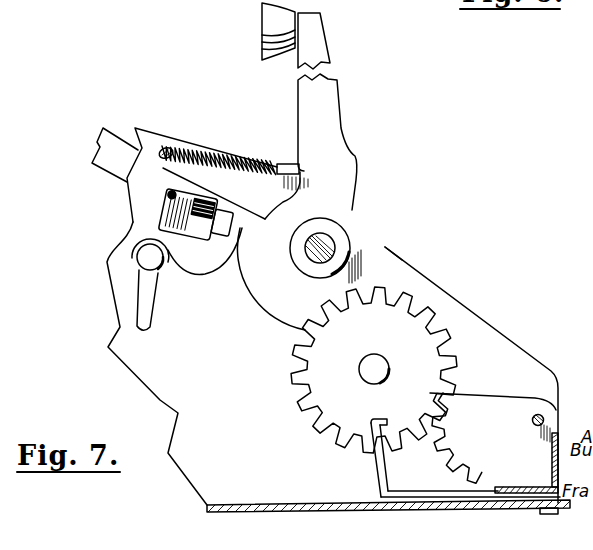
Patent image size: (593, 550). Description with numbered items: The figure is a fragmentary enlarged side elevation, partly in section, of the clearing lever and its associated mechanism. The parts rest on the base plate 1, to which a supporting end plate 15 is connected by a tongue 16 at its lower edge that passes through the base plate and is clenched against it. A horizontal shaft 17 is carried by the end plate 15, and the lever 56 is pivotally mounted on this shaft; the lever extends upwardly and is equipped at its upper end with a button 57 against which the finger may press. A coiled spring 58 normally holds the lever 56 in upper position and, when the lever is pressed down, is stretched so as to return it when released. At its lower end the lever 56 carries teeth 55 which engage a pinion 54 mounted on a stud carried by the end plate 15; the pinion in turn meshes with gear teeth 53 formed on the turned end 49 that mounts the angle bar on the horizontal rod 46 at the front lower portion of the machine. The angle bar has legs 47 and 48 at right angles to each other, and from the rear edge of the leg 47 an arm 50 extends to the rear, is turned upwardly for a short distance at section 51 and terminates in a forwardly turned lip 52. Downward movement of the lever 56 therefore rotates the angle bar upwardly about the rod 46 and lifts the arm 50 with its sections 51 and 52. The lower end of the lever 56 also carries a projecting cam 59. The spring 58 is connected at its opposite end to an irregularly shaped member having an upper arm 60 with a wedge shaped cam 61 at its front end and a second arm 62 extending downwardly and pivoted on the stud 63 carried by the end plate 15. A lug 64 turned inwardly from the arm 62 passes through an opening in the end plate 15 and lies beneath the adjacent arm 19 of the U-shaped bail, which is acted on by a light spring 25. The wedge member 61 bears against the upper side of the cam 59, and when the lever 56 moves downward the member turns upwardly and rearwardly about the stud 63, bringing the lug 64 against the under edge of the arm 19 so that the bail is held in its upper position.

The base plate 1 is at (291, 511).
The end plate 15 is at (496, 341).
The tongue 16 is at (548, 514).
The horizontal shaft 17 is at (316, 256).
The arm 19 is at (108, 163).
The light spring 25 is at (158, 220).
The horizontal rod 46 is at (543, 417).
The angle bar leg 47 is at (513, 487).
The angle bar leg 48 is at (553, 448).
The turned end 49 is at (500, 405).
The arm 50 is at (412, 490).
The upwardly turned section 51 is at (380, 457).
The forwardly turned lip 52 is at (380, 418).
The gear teeth 53 is at (450, 451).
The pinion 54 is at (307, 390).
The teeth 55 is at (393, 256).
The lever 56 is at (350, 157).
The button 57 is at (268, 22).
The coiled spring 58 is at (231, 157).
The projecting cam 59 is at (257, 283).
The upper arm 60 is at (192, 176).
The wedge shaped cam 61 is at (262, 212).
The second arm 62 is at (211, 268).
The stud 63 is at (142, 261).
The lug 64 is at (214, 229).